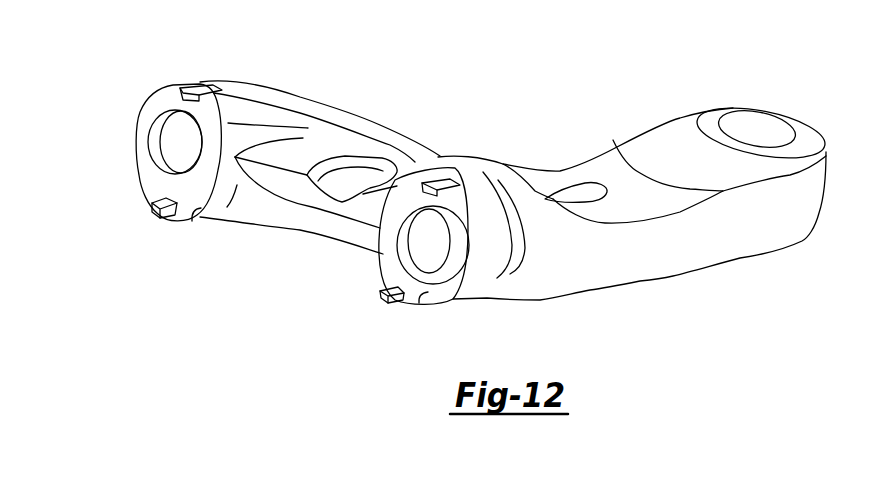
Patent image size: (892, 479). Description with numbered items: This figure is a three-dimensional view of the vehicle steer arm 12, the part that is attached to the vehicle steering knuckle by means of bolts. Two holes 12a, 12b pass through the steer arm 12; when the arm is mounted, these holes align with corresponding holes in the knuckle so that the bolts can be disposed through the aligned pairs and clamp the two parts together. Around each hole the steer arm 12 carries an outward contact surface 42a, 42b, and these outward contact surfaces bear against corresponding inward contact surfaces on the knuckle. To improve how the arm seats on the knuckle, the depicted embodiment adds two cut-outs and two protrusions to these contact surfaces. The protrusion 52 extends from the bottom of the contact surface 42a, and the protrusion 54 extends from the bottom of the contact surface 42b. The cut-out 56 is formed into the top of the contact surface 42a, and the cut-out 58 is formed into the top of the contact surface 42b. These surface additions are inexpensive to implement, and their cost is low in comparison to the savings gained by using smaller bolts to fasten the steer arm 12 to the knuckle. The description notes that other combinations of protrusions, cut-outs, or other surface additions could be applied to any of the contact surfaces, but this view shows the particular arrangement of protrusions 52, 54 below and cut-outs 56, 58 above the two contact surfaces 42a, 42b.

The vehicle steer arm 12 is at (667, 260).
The hole 12a is at (425, 241).
The hole 12b is at (172, 142).
The outward contact surface 42a is at (422, 297).
The outward contact surface 42b is at (193, 215).
The protrusion 52 is at (380, 298).
The protrusion 54 is at (155, 216).
The cut-out 56 is at (437, 180).
The cut-out 58 is at (188, 88).